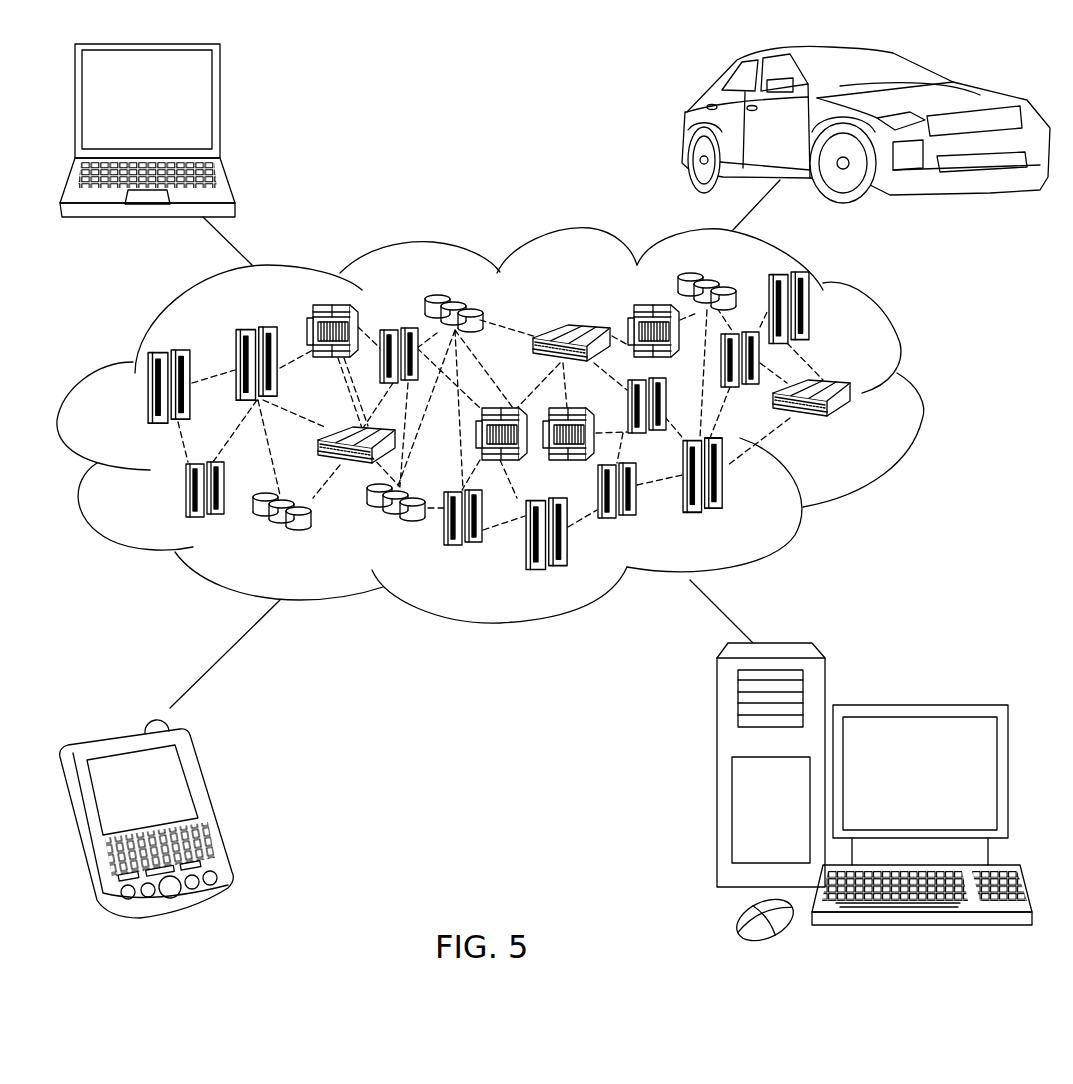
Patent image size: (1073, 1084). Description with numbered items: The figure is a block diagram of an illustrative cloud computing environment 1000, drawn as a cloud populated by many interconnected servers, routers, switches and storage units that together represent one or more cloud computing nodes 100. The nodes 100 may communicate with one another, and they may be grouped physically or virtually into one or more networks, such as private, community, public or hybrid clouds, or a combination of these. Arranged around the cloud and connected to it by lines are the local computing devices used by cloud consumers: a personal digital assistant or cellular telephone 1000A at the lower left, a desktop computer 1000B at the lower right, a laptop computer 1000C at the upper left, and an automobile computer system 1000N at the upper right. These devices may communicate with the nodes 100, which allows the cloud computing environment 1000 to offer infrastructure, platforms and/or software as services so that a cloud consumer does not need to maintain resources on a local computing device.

The cloud computing nodes 100 is at (859, 433).
The cloud computing environment 1000 is at (920, 397).
The personal digital assistant (PDA) or cellular telephone 1000A is at (208, 803).
The desktop computer 1000B is at (917, 705).
The laptop computer 1000C is at (220, 110).
The automobile computer system 1000N is at (687, 128).